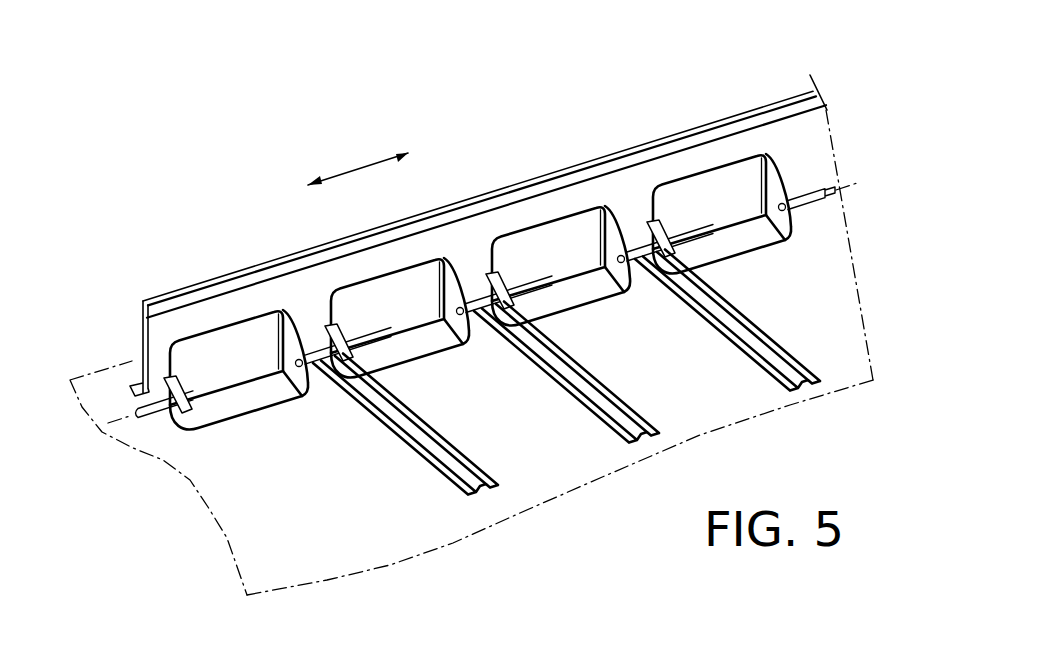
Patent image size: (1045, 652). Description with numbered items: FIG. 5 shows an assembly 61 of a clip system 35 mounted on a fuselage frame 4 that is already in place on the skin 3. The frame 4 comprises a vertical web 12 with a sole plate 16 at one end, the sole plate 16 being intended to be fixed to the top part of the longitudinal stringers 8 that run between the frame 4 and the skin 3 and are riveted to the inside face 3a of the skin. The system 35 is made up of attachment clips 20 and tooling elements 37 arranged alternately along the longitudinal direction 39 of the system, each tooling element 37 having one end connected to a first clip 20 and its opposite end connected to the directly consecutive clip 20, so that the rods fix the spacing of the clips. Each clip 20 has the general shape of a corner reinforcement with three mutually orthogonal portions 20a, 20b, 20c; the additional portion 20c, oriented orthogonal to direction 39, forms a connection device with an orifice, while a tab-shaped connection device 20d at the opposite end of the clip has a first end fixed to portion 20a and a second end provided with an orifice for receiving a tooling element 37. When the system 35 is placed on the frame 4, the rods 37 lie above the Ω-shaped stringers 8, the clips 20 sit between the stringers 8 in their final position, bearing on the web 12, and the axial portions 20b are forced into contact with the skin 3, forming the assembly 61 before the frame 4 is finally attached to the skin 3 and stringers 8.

The skin 3 is at (575, 464).
The inside face of the skin 3a is at (553, 478).
The frame 4 is at (830, 113).
The stringer 8 is at (503, 492).
The web 12 is at (793, 146).
The sole plate 16 is at (797, 102).
The attachment clip 20 is at (461, 281).
The portion of the clip 20a is at (207, 325).
The axial portion of the clip 20b is at (236, 440).
The additional portion of the clip 20c is at (327, 383).
The tab-shaped connection device 20d is at (143, 328).
The system 35 is at (223, 303).
The tooling element 37 is at (350, 352).
The longitudinal direction of the system 39 is at (358, 167).
The assembly 61 is at (485, 166).